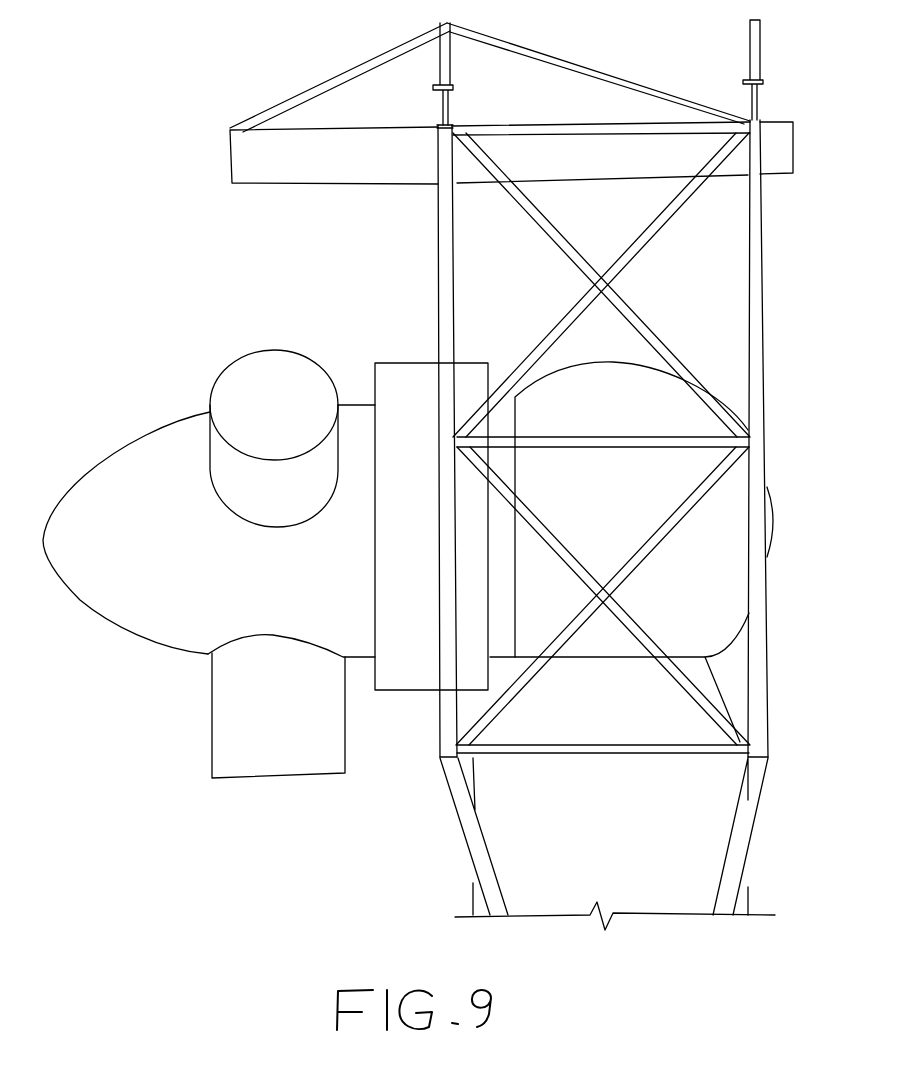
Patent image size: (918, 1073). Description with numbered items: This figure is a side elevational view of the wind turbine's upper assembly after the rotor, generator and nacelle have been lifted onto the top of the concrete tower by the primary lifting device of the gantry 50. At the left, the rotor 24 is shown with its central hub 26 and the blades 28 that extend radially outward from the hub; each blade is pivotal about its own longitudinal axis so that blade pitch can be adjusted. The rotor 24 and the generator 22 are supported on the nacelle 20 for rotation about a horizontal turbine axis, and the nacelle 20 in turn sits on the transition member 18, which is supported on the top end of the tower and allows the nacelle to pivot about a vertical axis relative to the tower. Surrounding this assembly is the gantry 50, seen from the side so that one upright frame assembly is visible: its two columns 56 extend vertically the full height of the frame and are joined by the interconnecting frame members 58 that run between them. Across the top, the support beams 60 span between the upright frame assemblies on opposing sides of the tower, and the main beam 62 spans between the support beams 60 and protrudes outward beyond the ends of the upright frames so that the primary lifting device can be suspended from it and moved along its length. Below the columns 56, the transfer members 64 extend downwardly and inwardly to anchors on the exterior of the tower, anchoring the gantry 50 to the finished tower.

The transition member 18 is at (563, 717).
The nacelle 20 is at (690, 420).
The generator 22 is at (397, 390).
The rotor 24 is at (142, 700).
The central hub 26 is at (120, 585).
The blades 28 is at (248, 390).
The gantry 50 is at (88, 259).
The columns 56 is at (440, 237).
The interconnecting frame members 58 is at (648, 240).
The support beams 60 is at (453, 110).
The main beam 62 is at (302, 184).
The transfer members 64 is at (468, 813).